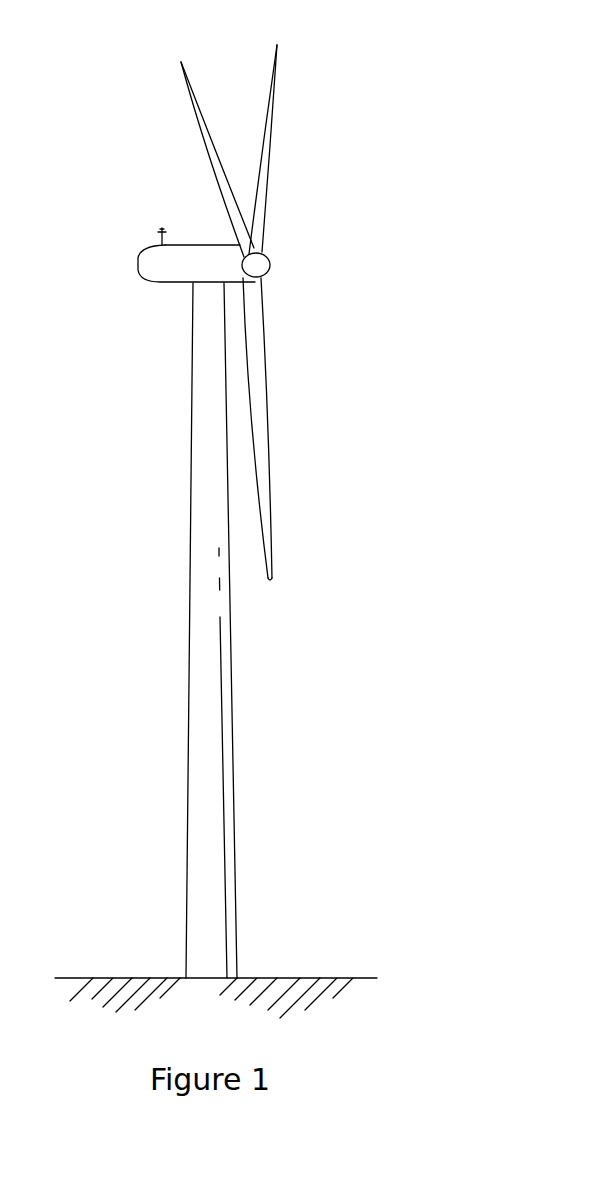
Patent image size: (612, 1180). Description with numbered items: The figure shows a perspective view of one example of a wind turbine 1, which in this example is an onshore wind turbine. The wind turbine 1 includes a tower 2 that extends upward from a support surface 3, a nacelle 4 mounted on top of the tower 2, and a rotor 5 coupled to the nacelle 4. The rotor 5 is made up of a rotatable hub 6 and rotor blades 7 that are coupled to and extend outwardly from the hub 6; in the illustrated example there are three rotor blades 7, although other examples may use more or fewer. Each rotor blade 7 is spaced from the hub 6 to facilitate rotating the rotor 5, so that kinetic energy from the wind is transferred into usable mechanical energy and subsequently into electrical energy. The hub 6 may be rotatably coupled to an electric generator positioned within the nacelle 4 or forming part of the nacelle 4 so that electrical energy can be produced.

The wind turbine 1 is at (376, 110).
The tower 2 is at (200, 727).
The support surface 3 is at (127, 977).
The nacelle 4 is at (176, 288).
The rotor 5 is at (265, 300).
The rotatable hub 6 is at (270, 258).
The rotor blade 7 is at (267, 82).